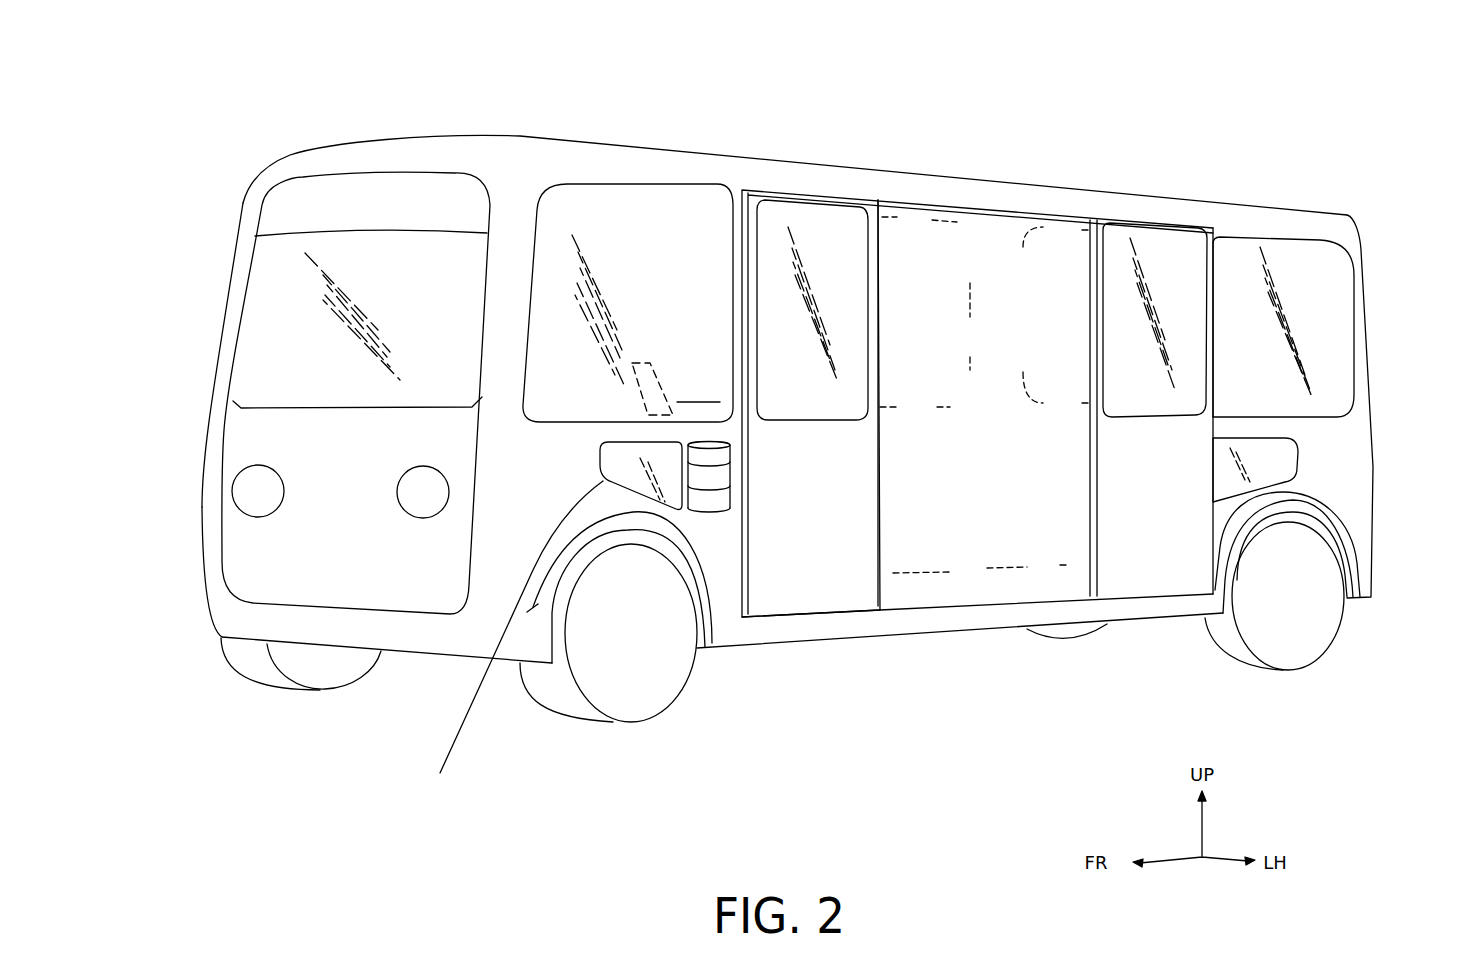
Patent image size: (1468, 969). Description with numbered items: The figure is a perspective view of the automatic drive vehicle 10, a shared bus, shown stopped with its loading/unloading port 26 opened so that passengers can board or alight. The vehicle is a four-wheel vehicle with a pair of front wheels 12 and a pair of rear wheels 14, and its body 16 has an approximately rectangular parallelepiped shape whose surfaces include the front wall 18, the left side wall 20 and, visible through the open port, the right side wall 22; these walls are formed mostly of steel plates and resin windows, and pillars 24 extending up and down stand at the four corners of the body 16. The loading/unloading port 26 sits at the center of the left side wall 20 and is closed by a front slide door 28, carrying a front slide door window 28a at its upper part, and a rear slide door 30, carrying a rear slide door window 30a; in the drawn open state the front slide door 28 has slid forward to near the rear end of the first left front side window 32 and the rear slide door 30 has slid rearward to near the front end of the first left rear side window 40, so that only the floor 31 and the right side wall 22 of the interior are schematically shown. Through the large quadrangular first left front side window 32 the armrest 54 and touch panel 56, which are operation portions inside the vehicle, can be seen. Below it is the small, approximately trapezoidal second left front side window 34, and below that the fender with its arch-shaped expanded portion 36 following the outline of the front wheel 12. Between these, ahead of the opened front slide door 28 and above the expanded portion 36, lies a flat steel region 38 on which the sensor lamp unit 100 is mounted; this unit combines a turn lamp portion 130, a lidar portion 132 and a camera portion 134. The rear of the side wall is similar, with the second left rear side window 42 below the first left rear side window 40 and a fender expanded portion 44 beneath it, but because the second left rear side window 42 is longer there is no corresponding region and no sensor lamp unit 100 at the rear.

The automatic drive vehicle 10 is at (1078, 115).
The front wheels 12 is at (328, 692).
The rear wheels 14 is at (1090, 637).
The body 16 is at (818, 158).
The front wall 18 is at (245, 437).
The left side wall 20 is at (795, 632).
The right side wall 22 is at (988, 243).
The pillars 24 is at (242, 210).
The loading/unloading port 26 is at (973, 588).
The front slide door 28 is at (860, 600).
The front slide door window 28a is at (773, 207).
The rear slide door 30 is at (1150, 583).
The rear slide door window 30a is at (1163, 233).
The floor 31 is at (927, 590).
The first left front side window 32 is at (652, 193).
The second left front side window 34 is at (513, 641).
The expanded portion 36 is at (533, 607).
The region 38 is at (723, 526).
The first left rear side window 40 is at (1243, 245).
The second left rear side window 42 is at (1290, 460).
The expanded portion 44 is at (1350, 548).
The armrest 54 is at (700, 402).
The touch panel 56 is at (663, 367).
The sensor lamp unit 100 is at (703, 510).
The turn lamp portion 130 is at (730, 453).
The lidar portion 132 is at (730, 473).
The camera portion 134 is at (730, 497).